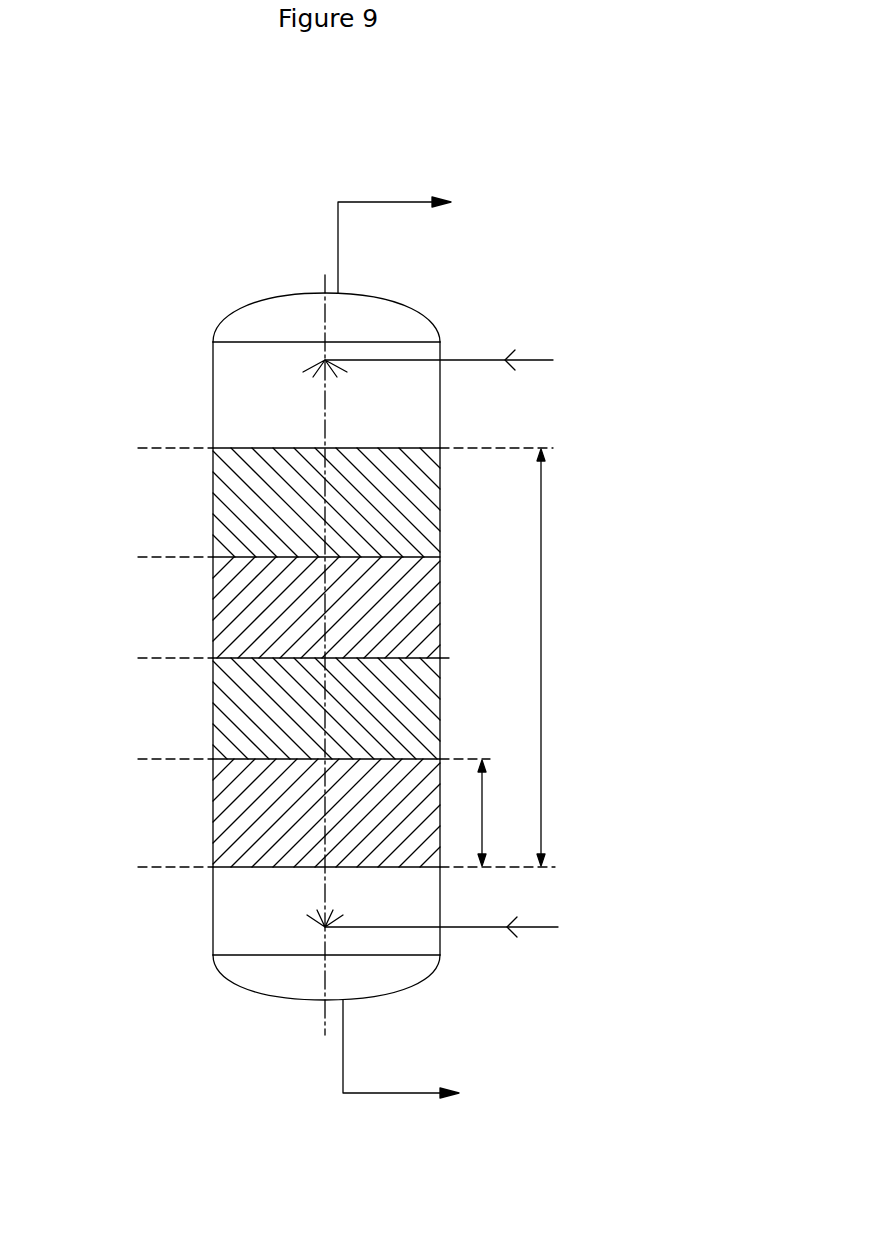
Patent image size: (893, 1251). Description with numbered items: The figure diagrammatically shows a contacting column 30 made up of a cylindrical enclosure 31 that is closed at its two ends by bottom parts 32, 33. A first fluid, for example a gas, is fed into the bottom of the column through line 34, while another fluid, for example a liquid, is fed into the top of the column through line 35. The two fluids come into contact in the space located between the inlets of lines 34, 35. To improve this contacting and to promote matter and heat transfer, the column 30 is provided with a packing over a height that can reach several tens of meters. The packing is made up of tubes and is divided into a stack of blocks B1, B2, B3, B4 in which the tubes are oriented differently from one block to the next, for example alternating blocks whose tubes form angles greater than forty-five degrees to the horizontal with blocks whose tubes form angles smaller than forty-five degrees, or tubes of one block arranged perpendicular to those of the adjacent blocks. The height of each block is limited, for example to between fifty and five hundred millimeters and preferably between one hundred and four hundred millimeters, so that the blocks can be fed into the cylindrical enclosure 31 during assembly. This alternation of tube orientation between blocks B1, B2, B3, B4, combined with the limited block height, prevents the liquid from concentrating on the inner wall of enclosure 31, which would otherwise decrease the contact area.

The contacting column 30 is at (305, 647).
The cylindrical enclosure 31 is at (441, 893).
The bottom part 32 is at (417, 985).
The bottom part 33 is at (413, 308).
The line 34 is at (542, 929).
The line 35 is at (537, 362).
The block B1 is at (149, 450).
The block B2 is at (149, 559).
The block B3 is at (149, 660).
The block B4 is at (271, 813).